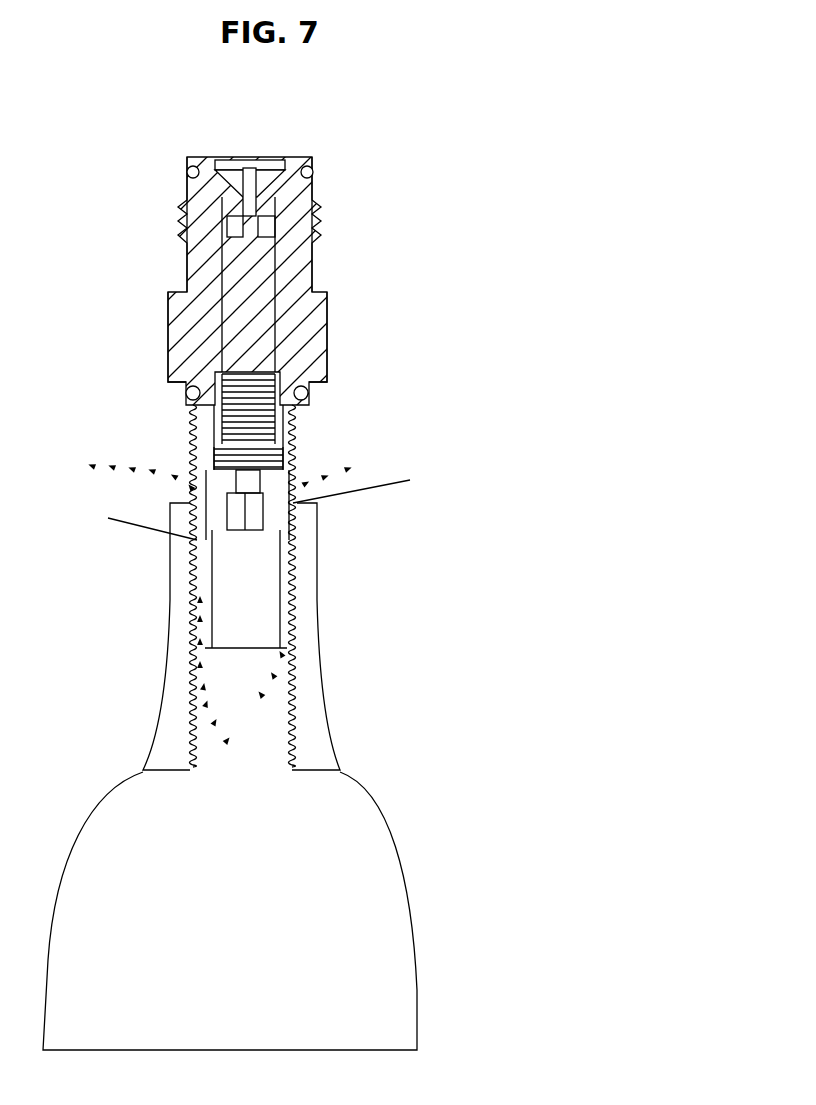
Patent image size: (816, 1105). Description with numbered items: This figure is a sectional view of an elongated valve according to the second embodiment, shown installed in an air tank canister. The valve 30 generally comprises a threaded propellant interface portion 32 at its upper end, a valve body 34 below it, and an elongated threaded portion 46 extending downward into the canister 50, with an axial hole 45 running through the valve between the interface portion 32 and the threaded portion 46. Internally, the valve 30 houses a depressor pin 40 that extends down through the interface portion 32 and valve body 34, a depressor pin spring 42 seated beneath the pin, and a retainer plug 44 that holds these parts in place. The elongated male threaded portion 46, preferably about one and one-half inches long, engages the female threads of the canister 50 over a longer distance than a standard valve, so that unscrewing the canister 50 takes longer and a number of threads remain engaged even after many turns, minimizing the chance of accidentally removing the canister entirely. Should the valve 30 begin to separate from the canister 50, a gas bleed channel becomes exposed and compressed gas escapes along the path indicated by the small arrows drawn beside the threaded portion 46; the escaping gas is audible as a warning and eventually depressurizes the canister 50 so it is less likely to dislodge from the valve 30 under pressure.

The valve 30 is at (340, 178).
The threaded propellant interface portion 32 is at (184, 212).
The valve body 34 is at (166, 322).
The depressor pin 40 is at (240, 278).
The depressor pin spring 42 is at (258, 409).
The retainer plug 44 is at (272, 507).
The axial hole 45 is at (250, 640).
The threaded portion 46 is at (192, 570).
The canister 50 is at (418, 948).